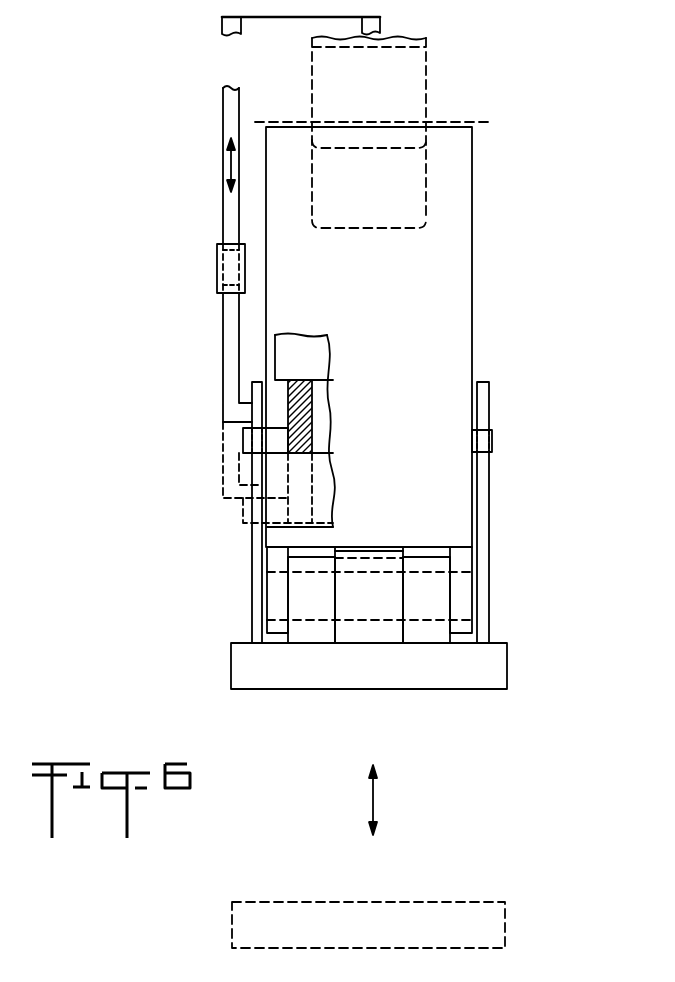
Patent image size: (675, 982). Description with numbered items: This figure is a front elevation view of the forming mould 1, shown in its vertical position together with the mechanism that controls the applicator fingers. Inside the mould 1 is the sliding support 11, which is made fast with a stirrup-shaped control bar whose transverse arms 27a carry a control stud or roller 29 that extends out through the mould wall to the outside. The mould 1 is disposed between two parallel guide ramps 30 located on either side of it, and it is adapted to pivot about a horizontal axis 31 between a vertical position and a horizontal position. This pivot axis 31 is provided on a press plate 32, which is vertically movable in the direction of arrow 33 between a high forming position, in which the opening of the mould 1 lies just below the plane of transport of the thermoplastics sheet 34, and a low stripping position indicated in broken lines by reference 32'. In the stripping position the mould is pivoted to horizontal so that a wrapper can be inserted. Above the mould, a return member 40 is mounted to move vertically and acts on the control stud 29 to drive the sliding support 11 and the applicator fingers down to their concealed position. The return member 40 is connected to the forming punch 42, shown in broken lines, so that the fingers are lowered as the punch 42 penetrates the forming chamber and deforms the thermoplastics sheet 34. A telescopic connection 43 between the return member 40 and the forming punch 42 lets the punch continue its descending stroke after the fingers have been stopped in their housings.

The forming mould 1 is at (472, 270).
The sliding support 11 is at (318, 349).
The transverse arms 27a is at (305, 411).
The control stud or roller 29 is at (243, 442).
The guide ramps 30 is at (256, 583).
The horizontal pivot axis 31 is at (440, 597).
The press plate 32 is at (398, 666).
The press plate in stripping position 32' is at (409, 919).
The arrow of vertical movement of press plate 33 is at (376, 795).
The thermoplastics sheet 34 is at (455, 121).
The return member 40 is at (232, 413).
The forming punch 42 is at (414, 90).
The telescopic connection 43 is at (212, 276).